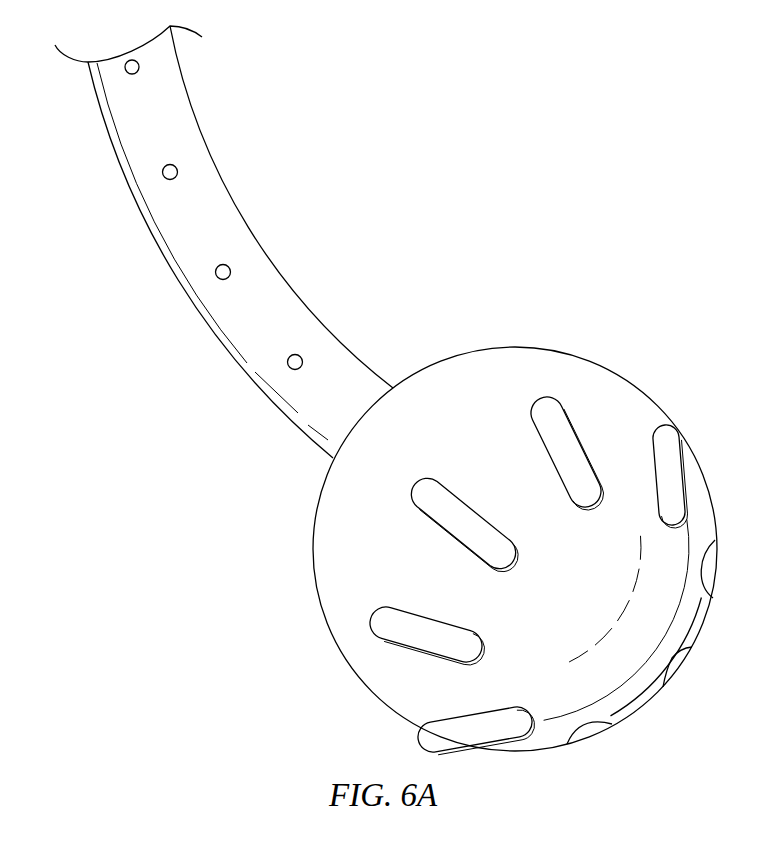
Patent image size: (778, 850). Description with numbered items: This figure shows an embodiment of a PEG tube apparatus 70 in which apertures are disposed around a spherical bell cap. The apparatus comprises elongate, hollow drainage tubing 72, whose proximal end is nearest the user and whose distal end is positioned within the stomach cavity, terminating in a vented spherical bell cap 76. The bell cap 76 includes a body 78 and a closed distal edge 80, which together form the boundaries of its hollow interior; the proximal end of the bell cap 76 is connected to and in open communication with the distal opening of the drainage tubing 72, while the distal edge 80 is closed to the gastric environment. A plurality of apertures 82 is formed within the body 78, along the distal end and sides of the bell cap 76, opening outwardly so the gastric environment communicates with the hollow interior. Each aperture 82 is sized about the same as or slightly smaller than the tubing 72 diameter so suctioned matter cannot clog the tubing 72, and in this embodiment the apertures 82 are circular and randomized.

The PEG tube apparatus 70 is at (520, 195).
The hollow drainage tubing 72 is at (178, 283).
The bell cap 76 is at (646, 768).
The body 78 is at (332, 540).
The closed distal edge 80 is at (595, 624).
The apertures 82 is at (560, 432).